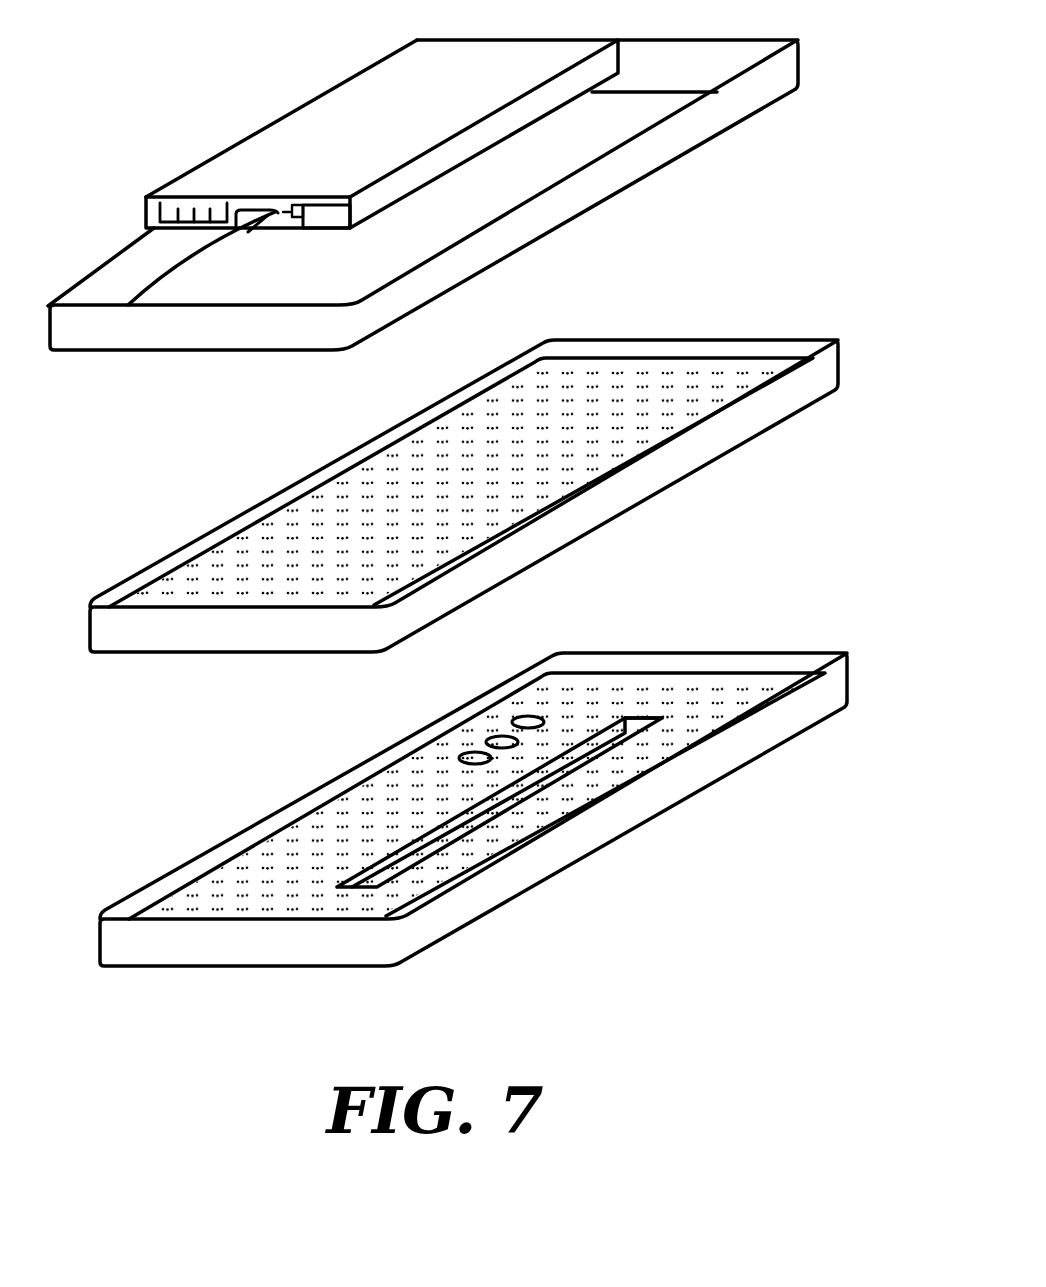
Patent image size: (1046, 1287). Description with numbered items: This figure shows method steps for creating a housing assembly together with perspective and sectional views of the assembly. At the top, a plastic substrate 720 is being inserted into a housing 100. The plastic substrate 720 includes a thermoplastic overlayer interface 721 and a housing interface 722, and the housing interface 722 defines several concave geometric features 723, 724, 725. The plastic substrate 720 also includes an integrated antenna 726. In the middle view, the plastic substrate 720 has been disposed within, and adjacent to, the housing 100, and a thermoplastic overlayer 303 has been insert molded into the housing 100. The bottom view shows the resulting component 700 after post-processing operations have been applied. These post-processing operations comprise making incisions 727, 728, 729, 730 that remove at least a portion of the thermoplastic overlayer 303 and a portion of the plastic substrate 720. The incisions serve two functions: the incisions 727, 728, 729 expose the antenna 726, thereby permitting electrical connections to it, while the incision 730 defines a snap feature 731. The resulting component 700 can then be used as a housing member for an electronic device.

The component 700 is at (447, 503).
The housing 100 is at (583, 193).
The thermoplastic overlayer 303 is at (382, 498).
The plastic substrate 720 is at (337, 161).
The thermoplastic overlayer interface 721 is at (227, 168).
The housing interface 722 is at (327, 230).
The concave geometric feature 723 is at (283, 217).
The concave geometric feature 724 is at (262, 220).
The concave geometric feature 725 is at (303, 200).
The integrated antenna 726 is at (145, 203).
The incision 727 is at (457, 758).
The incision 728 is at (486, 741).
The incision 729 is at (528, 716).
The incision 730 is at (643, 717).
The snap feature 731 is at (512, 817).